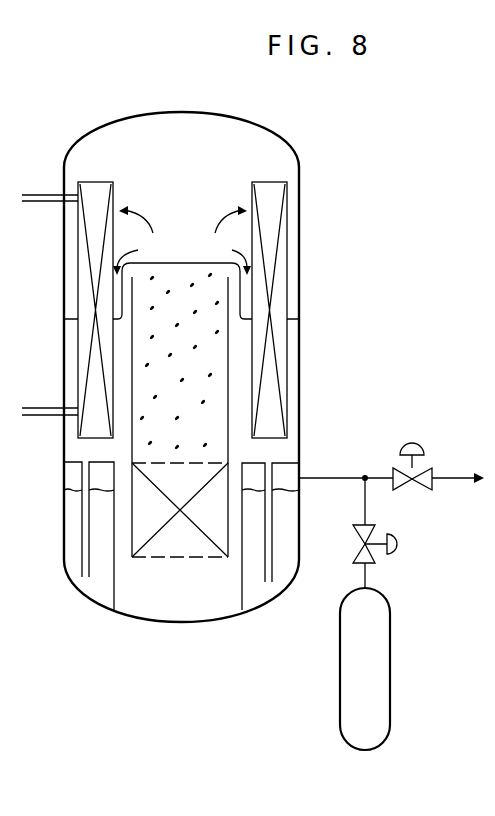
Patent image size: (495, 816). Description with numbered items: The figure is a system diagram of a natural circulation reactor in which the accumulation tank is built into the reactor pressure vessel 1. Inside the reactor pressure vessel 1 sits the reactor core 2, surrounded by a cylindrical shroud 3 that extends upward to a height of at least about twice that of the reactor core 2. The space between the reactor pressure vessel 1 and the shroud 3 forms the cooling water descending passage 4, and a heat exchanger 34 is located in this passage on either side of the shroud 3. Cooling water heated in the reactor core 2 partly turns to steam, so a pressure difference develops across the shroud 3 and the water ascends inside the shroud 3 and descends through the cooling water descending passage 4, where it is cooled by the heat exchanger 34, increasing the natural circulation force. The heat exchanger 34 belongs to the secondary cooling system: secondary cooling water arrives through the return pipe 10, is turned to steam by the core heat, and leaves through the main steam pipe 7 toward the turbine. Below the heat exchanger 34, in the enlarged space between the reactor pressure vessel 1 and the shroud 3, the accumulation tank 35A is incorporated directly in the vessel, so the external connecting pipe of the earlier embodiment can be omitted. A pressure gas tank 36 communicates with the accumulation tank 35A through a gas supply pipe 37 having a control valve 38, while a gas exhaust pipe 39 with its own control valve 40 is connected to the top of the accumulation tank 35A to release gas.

The reactor pressure vessel 1 is at (88, 133).
The main steam pipe 7 is at (33, 202).
The return pipe 10 is at (33, 406).
The cooling water descending passage 4 is at (65, 340).
The heat exchanger 34 is at (281, 266).
The shroud 3 is at (227, 455).
The reactor core 2 is at (177, 545).
The accumulation tank 35A is at (64, 537).
The gas supply pipe 37 is at (365, 503).
The control valve 40 is at (412, 445).
The gas exhaust pipe 39 is at (453, 477).
The control valve 38 is at (401, 545).
The pressure gas tank 36 is at (391, 666).